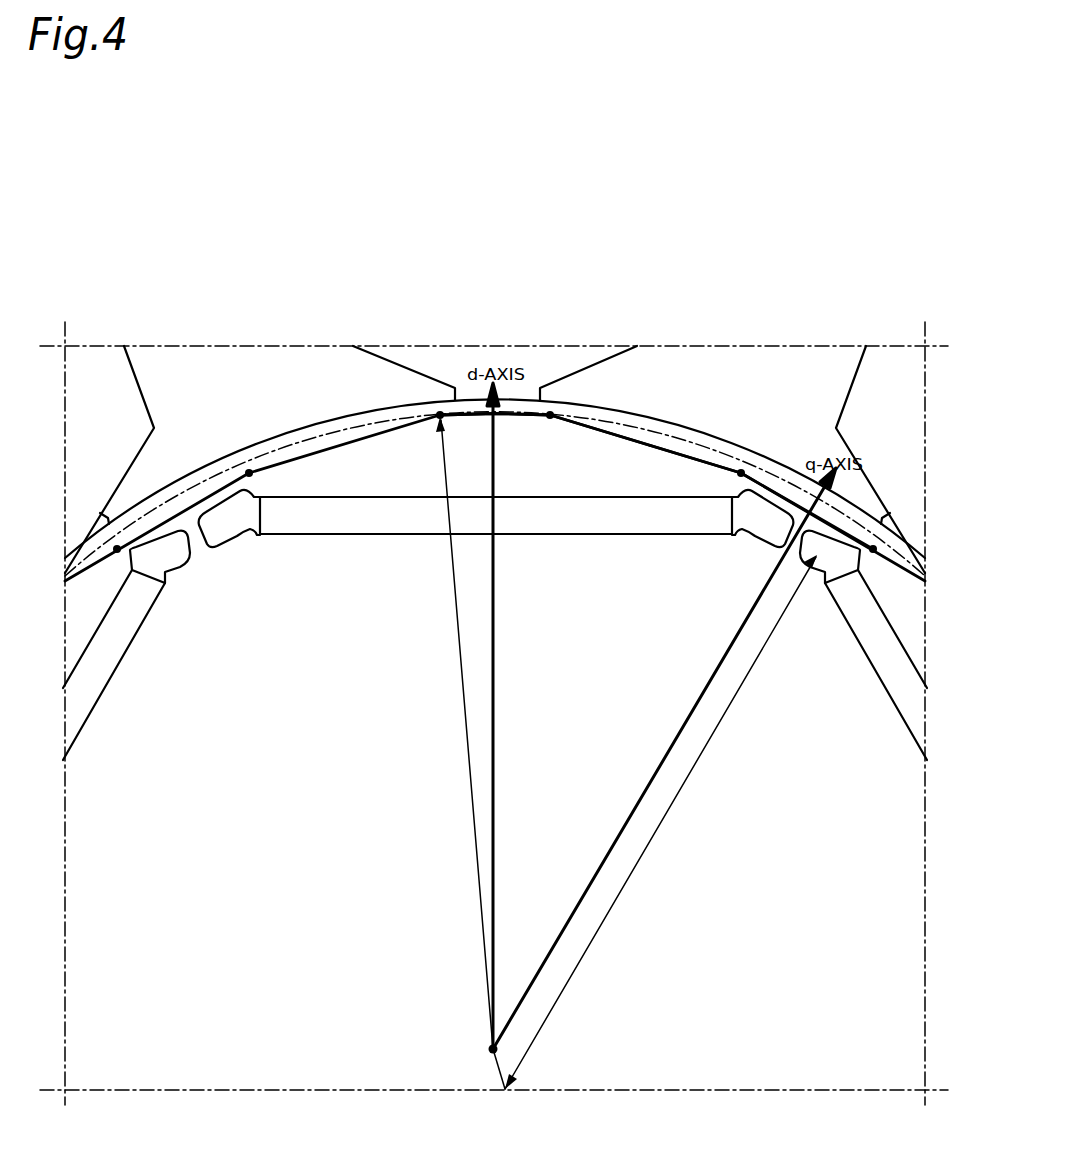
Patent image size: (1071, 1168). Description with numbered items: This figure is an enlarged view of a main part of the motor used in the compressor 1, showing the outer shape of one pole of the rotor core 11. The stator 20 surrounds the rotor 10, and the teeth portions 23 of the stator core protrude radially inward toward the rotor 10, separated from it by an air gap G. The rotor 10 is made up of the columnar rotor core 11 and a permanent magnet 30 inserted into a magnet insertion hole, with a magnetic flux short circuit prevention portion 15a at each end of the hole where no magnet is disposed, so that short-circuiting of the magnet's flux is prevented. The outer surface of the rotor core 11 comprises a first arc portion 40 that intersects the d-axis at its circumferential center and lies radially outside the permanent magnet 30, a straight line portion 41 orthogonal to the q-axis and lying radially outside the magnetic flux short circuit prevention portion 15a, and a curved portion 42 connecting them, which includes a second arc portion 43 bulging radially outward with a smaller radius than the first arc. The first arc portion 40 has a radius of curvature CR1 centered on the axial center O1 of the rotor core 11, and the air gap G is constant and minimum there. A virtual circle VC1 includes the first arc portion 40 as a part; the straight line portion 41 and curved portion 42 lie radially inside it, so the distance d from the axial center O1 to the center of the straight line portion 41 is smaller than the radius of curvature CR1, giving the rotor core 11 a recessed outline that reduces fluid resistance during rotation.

The compressor 1 is at (654, 270).
The stator 20 is at (128, 386).
The teeth portion 23 is at (222, 375).
The rotor 10 is at (318, 436).
The rotor core 11 is at (362, 422).
The permanent magnet 30 is at (566, 520).
The magnetic flux short circuit prevention portion 15a is at (765, 530).
The first arc portion 40 is at (458, 410).
The straight line portion 41 is at (792, 497).
The curved portion 42 is at (660, 430).
The second arc portion 43 is at (688, 448).
The air gap G is at (528, 440).
The axial center O1 is at (490, 1049).
The radius of curvature CR1 is at (460, 733).
The virtual circle VC1 is at (850, 512).
The distance d is at (655, 822).